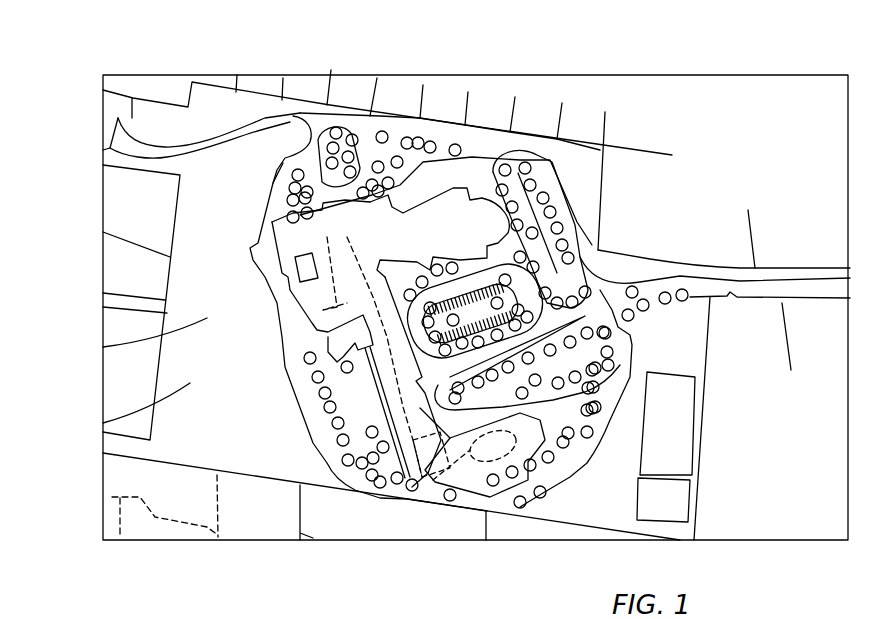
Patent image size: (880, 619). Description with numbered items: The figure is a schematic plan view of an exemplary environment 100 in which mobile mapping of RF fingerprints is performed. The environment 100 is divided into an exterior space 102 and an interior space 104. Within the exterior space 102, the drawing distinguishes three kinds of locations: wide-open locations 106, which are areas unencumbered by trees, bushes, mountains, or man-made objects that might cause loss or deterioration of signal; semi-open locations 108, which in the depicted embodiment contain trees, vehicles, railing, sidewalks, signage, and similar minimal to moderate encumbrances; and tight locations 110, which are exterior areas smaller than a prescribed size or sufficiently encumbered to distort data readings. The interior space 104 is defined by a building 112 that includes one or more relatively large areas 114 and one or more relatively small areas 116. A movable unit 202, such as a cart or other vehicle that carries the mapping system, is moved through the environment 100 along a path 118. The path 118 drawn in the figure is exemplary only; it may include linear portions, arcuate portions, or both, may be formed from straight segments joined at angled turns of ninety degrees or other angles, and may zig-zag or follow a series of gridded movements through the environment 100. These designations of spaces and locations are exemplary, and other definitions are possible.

The environment 100 is at (225, 435).
The exterior space 102 is at (205, 318).
The interior space 104 is at (433, 230).
The wide-open locations 106 is at (188, 383).
The semi-open locations 108 is at (528, 297).
The tight locations 110 is at (340, 323).
The building 112 is at (455, 475).
The relatively large areas 114 is at (338, 230).
The relatively small areas 116 is at (398, 415).
The path 118 is at (423, 440).
The movable unit 202 is at (305, 257).